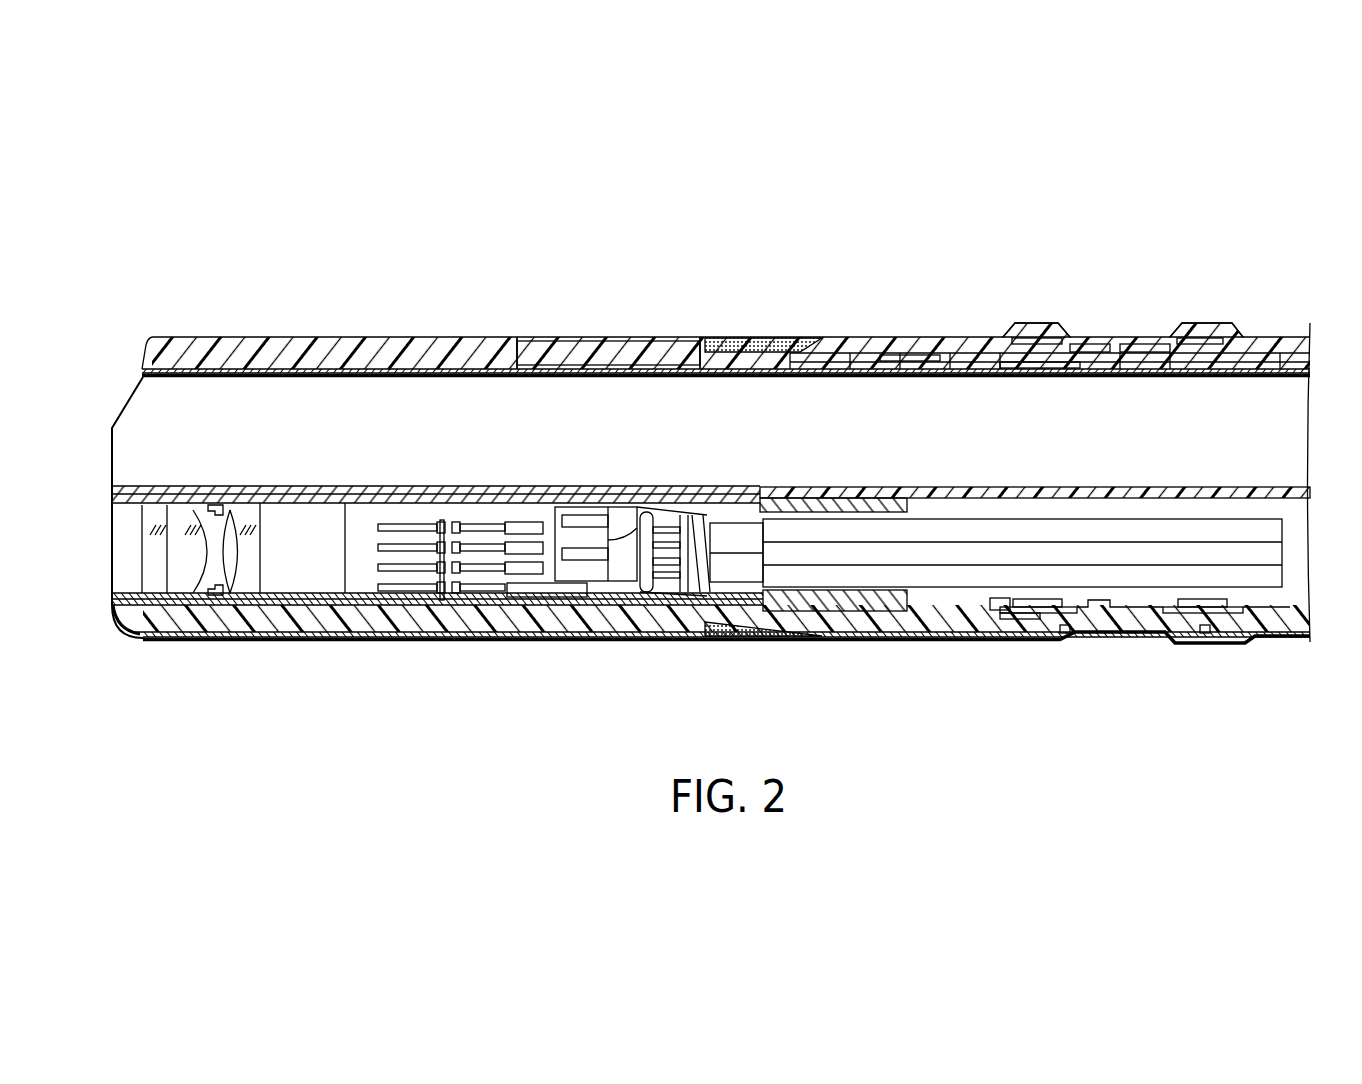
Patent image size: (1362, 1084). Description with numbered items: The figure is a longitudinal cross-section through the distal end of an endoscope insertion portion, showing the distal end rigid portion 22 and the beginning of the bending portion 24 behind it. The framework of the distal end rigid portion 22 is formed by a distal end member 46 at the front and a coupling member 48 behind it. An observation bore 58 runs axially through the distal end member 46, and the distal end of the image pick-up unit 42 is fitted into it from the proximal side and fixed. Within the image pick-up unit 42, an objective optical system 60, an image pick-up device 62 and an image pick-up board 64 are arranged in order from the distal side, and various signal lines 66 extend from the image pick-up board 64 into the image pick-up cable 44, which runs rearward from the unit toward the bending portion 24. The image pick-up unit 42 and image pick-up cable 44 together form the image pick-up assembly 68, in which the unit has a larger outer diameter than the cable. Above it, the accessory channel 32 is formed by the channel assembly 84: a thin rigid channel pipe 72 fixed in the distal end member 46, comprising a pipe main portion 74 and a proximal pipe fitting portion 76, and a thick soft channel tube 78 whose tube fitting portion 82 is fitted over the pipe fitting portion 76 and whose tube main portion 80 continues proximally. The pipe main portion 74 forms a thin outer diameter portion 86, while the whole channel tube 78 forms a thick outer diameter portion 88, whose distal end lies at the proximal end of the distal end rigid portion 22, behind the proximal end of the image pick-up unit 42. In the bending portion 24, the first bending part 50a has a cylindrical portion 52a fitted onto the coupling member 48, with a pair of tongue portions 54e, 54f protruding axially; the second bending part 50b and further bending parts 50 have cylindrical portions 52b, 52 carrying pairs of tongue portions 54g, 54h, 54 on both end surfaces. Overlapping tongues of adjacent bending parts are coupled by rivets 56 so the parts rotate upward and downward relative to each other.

The distal end rigid portion 22 is at (377, 296).
The bending portion 24 is at (1172, 270).
The accessory channel 32 is at (752, 447).
The image pick-up unit 42 is at (423, 595).
The image pick-up cable 44 is at (912, 500).
The distal end member 46 is at (162, 337).
The coupling member 48 is at (582, 337).
The bending part 50 is at (1308, 636).
The first bending part 50a is at (900, 644).
The second bending part 50b is at (1123, 627).
The cylindrical portion 52 is at (1273, 637).
The cylindrical portion 52a is at (963, 638).
The cylindrical portion 52b is at (1152, 617).
The tongue portion 54 is at (1232, 345).
The tongue portion 54e is at (1005, 365).
The tongue portion 54f is at (1000, 600).
The tongue portion 54g is at (1081, 340).
The tongue portion 54h is at (1023, 623).
The rivet 56 is at (1043, 338).
The observation bore 58 is at (165, 600).
The objective optical system 60 is at (178, 585).
The image pick-up device 62 is at (305, 595).
The image pick-up board 64 is at (357, 595).
The signal lines 66 is at (582, 580).
The image pick-up assembly 68 is at (857, 602).
The channel pipe 72 is at (486, 337).
The pipe main portion 74 is at (486, 350).
The pipe fitting portion 76 is at (773, 343).
The channel tube 78 is at (922, 348).
The tube main portion 80 is at (953, 360).
The tube fitting portion 82 is at (829, 340).
The channel assembly 84 is at (683, 350).
The thin outer diameter portion 86 is at (330, 356).
The thick outer diameter portion 88 is at (1136, 350).